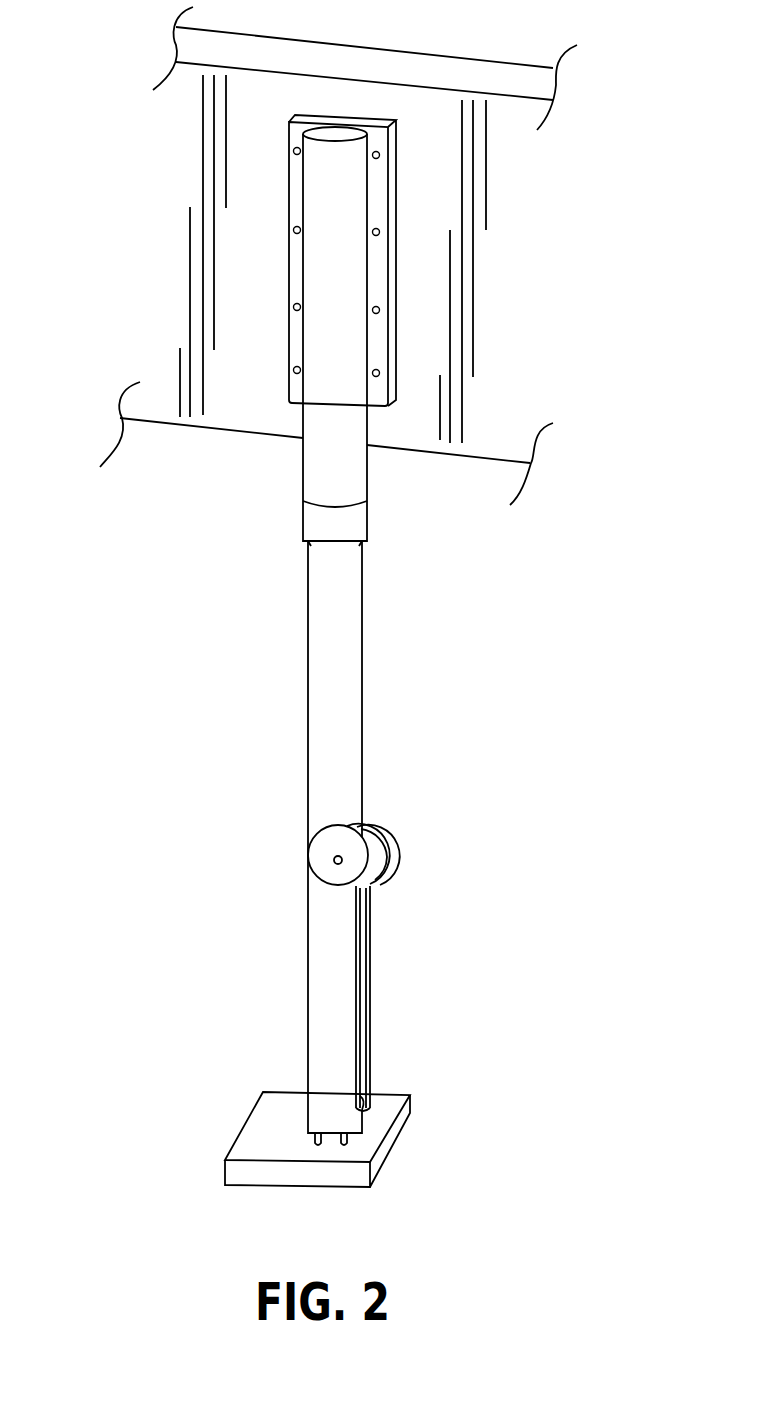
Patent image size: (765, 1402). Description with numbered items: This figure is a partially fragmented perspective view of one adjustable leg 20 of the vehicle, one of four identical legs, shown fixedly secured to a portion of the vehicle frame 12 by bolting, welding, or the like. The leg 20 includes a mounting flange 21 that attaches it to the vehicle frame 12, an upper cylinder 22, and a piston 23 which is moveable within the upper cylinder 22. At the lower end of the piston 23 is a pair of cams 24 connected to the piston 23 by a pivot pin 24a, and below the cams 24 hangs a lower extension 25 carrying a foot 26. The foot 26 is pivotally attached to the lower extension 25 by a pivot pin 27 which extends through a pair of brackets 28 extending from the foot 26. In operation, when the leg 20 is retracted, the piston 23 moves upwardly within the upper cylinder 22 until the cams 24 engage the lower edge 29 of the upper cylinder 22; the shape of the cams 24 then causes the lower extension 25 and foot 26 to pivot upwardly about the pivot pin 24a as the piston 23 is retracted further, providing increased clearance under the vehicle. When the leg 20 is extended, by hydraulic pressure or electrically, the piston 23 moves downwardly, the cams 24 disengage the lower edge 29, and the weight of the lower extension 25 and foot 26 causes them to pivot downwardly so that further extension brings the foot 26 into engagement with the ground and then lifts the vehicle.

The vehicle frame 12 is at (243, 102).
The leg 20 is at (150, 714).
The mounting flange 21 is at (378, 276).
The upper cylinder 22 is at (348, 478).
The piston 23 is at (340, 637).
The cams 24 is at (365, 825).
The pivot pin 24a is at (336, 862).
The lower extension 25 is at (335, 970).
The foot 26 is at (388, 1098).
The pivot pin 27 is at (367, 1076).
The brackets 28 is at (342, 1146).
The lower edge 29 is at (325, 547).